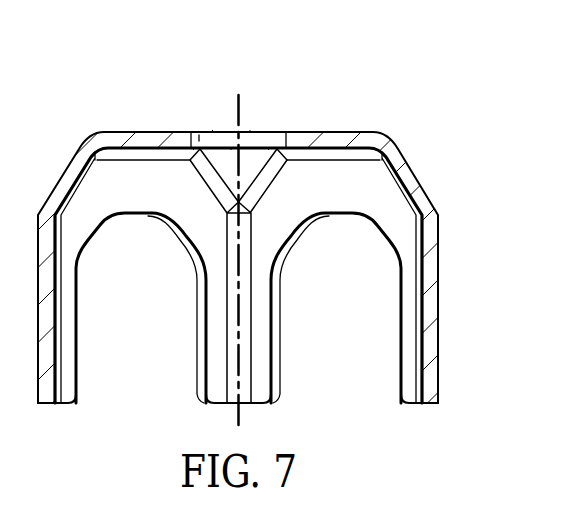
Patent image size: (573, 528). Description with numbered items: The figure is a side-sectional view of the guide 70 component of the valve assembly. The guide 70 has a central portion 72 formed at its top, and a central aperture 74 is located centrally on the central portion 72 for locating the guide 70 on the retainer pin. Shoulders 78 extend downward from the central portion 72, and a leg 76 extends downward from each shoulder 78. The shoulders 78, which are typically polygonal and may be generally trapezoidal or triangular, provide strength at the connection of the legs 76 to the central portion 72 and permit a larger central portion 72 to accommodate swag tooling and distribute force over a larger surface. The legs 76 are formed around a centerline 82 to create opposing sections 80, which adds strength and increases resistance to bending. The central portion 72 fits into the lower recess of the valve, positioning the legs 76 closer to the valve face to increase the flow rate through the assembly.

The guide 70 is at (385, 77).
The central portion 72 is at (116, 130).
The central aperture 74 is at (280, 130).
The leg 76 is at (440, 302).
The shoulder 78 is at (417, 170).
The opposing section 80 is at (217, 350).
The centerline 82 is at (235, 113).